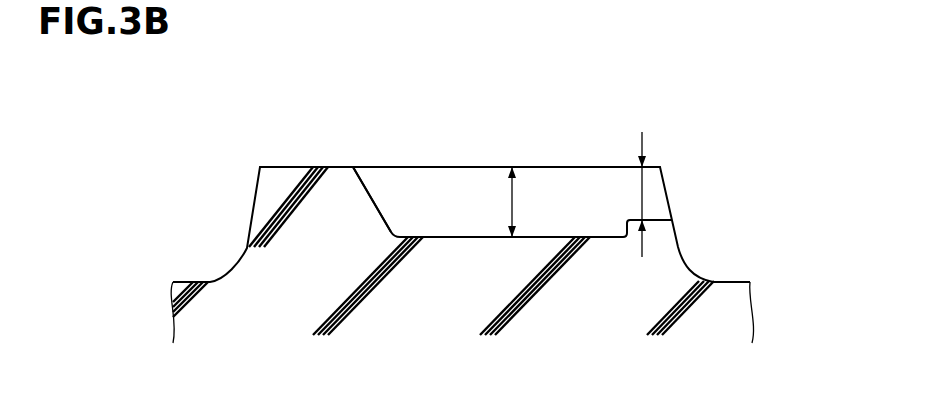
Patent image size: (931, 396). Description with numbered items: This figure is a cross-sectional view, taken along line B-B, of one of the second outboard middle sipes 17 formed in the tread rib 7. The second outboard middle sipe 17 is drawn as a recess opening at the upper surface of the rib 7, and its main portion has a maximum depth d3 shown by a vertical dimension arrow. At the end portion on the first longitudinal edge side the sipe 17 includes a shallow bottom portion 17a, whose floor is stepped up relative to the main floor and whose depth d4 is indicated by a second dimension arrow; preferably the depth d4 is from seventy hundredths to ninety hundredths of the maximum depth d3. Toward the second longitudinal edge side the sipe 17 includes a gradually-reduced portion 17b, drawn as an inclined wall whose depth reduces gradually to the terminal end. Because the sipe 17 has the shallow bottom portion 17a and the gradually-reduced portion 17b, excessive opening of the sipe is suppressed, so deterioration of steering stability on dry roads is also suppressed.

The block 7 is at (295, 168).
The second outboard middle sipe 17 is at (455, 228).
The shallow bottom portion 17a is at (657, 220).
The gradually-reduced portion 17b is at (376, 205).
The maximum depth d3 is at (512, 202).
The depth d4 is at (642, 193).